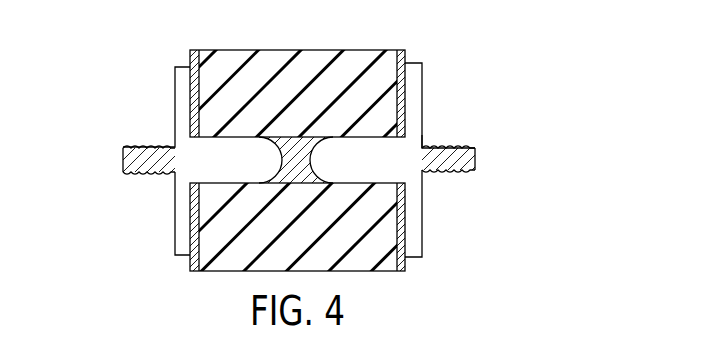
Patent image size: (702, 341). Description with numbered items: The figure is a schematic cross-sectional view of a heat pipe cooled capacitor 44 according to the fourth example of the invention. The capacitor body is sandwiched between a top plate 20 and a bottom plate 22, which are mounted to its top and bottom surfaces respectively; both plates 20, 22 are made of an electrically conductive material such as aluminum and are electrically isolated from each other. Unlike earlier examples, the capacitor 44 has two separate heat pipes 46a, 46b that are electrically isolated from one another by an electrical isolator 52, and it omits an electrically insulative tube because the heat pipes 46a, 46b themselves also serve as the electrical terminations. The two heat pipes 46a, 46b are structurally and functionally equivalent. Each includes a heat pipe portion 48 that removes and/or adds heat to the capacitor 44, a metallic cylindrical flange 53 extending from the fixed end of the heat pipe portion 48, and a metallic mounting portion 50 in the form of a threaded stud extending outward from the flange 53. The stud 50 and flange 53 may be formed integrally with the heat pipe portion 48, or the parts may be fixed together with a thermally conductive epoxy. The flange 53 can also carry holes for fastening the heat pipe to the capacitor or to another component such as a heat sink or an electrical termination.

The top plate 20 is at (402, 51).
The bottom plate 22 is at (190, 52).
The heat pipe cooled capacitor 44 is at (519, 81).
The heat pipe 46a is at (428, 136).
The heat pipe 46b is at (173, 223).
The heat pipe portion 48 is at (383, 163).
The mounting portion 50 is at (457, 147).
The electrical isolator 52 is at (303, 172).
The cylindrical flange 53 is at (414, 72).